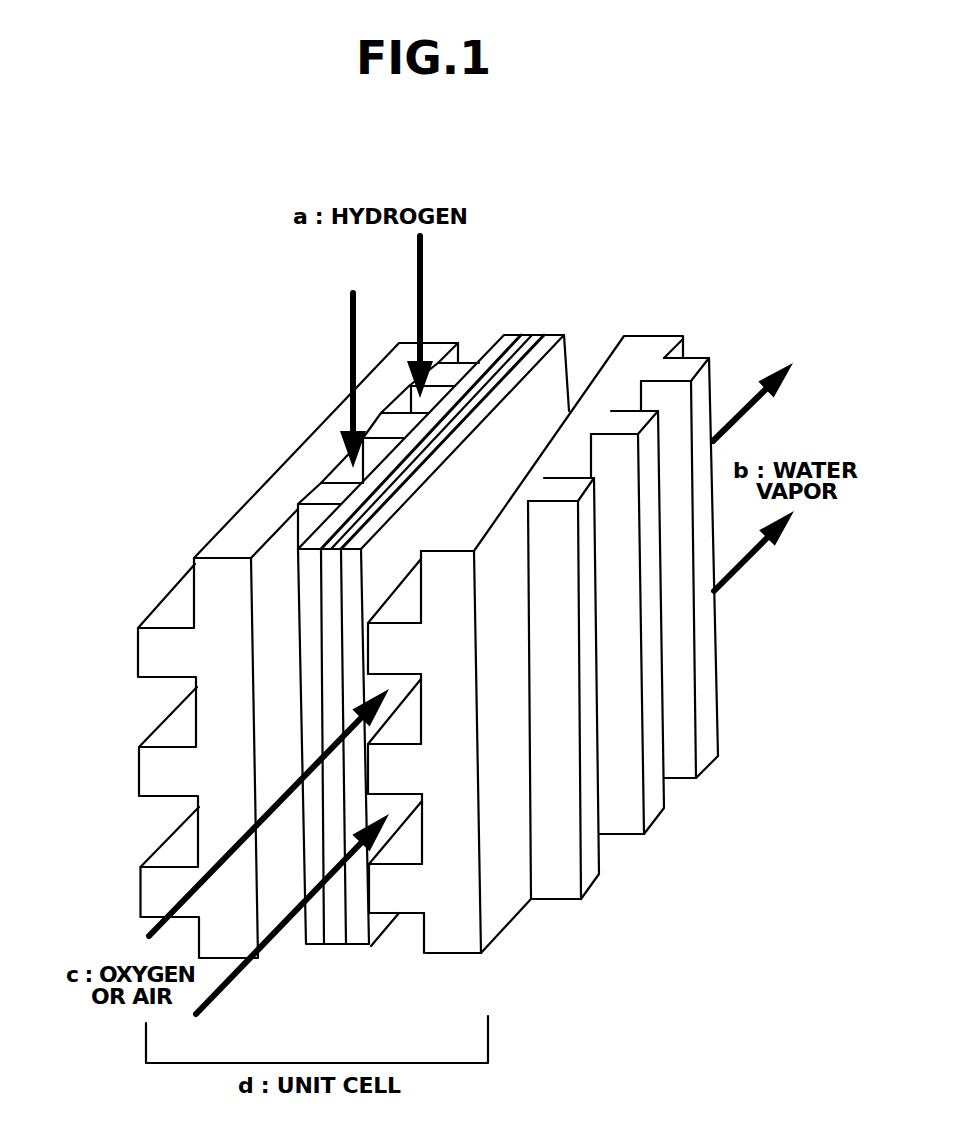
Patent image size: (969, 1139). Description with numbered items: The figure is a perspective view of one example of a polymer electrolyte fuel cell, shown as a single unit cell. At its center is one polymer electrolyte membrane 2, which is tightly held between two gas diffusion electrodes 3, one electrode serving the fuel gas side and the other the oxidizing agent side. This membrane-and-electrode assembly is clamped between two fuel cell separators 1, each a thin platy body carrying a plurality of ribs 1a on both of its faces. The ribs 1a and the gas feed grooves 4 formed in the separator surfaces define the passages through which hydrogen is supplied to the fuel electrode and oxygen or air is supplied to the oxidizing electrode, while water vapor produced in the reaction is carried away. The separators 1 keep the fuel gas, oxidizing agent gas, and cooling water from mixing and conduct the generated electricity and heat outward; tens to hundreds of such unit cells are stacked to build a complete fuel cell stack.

The fuel cell separator 1 is at (227, 513).
The ribs 1a is at (320, 492).
The polymer electrolyte membrane 2 is at (525, 332).
The gas diffusion electrodes 3 is at (510, 335).
The gas feed grooves 4 is at (405, 748).